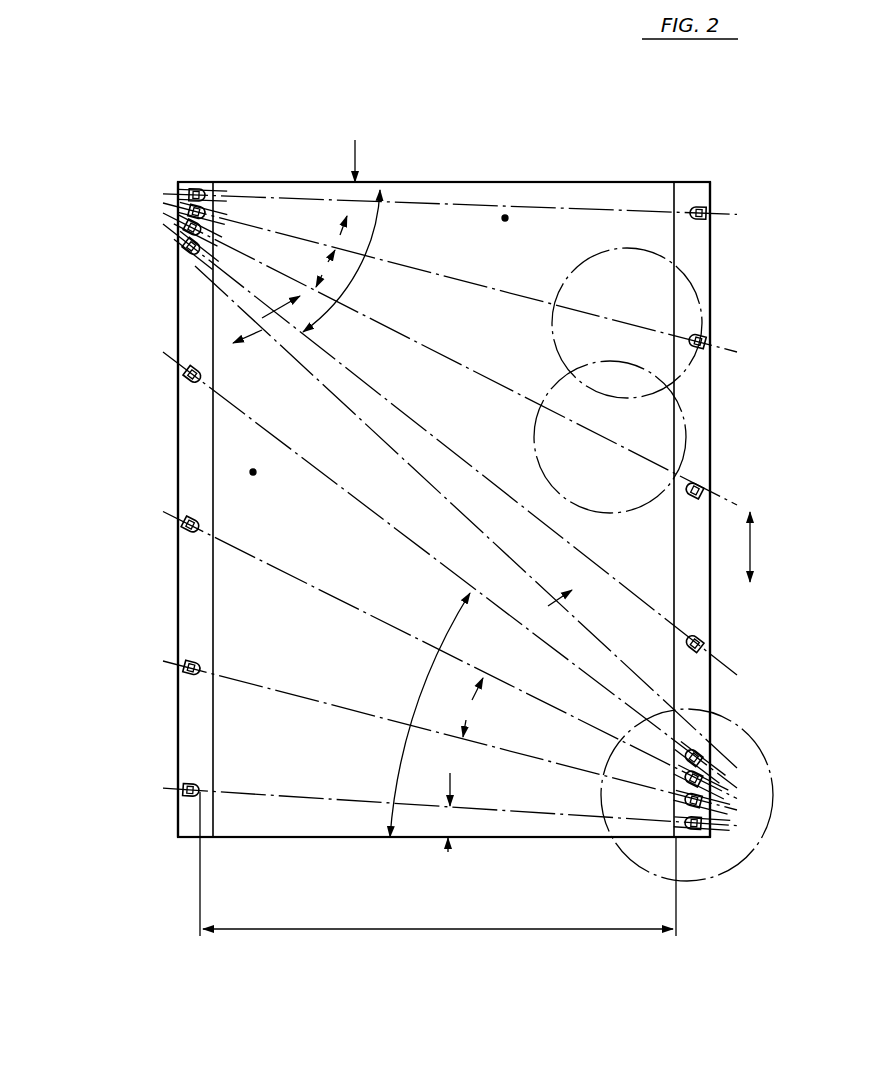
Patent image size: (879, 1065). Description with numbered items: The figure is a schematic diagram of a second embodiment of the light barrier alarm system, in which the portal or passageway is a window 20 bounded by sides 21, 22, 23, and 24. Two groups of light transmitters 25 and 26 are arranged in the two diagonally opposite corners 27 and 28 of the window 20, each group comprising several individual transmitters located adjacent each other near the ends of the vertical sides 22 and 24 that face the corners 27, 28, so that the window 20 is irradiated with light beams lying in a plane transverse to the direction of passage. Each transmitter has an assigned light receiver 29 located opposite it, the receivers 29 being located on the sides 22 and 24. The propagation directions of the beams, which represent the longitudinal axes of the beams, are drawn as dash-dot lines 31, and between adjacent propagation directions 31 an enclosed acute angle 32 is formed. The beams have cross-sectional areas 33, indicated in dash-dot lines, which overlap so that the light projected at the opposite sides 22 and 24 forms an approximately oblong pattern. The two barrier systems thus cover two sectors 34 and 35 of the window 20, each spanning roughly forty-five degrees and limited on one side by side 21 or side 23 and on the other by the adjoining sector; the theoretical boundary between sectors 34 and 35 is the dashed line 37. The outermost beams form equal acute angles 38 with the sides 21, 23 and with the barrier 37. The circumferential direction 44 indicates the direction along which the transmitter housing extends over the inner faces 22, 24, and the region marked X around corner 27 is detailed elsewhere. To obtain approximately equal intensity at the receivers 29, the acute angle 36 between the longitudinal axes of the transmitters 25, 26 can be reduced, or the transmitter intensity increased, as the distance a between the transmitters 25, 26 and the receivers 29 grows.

The window 20 is at (553, 264).
The side of window 21 is at (363, 840).
The vertical side of window 22 is at (176, 584).
The side of window 23 is at (480, 182).
The vertical side of window 24 is at (714, 436).
The group of light transmitters 25 is at (722, 775).
The group of light transmitters 26 is at (152, 213).
The corner of window 27 is at (710, 846).
The corner of window 28 is at (172, 178).
The light receiver 29 is at (190, 680).
The direction of propagation 31 is at (160, 662).
The acute angle 32 is at (396, 493).
The cross-sectional area of beam 33 is at (547, 388).
The sector 34 is at (505, 218).
The sector 35 is at (253, 472).
The acute angle between longitudinal axes 36 is at (386, 513).
The boundary line (barrier) 37 is at (437, 500).
The acute angle 38 is at (402, 496).
The circumferential direction 44 is at (752, 548).
The detail circle X is at (735, 720).
The distance a is at (438, 866).